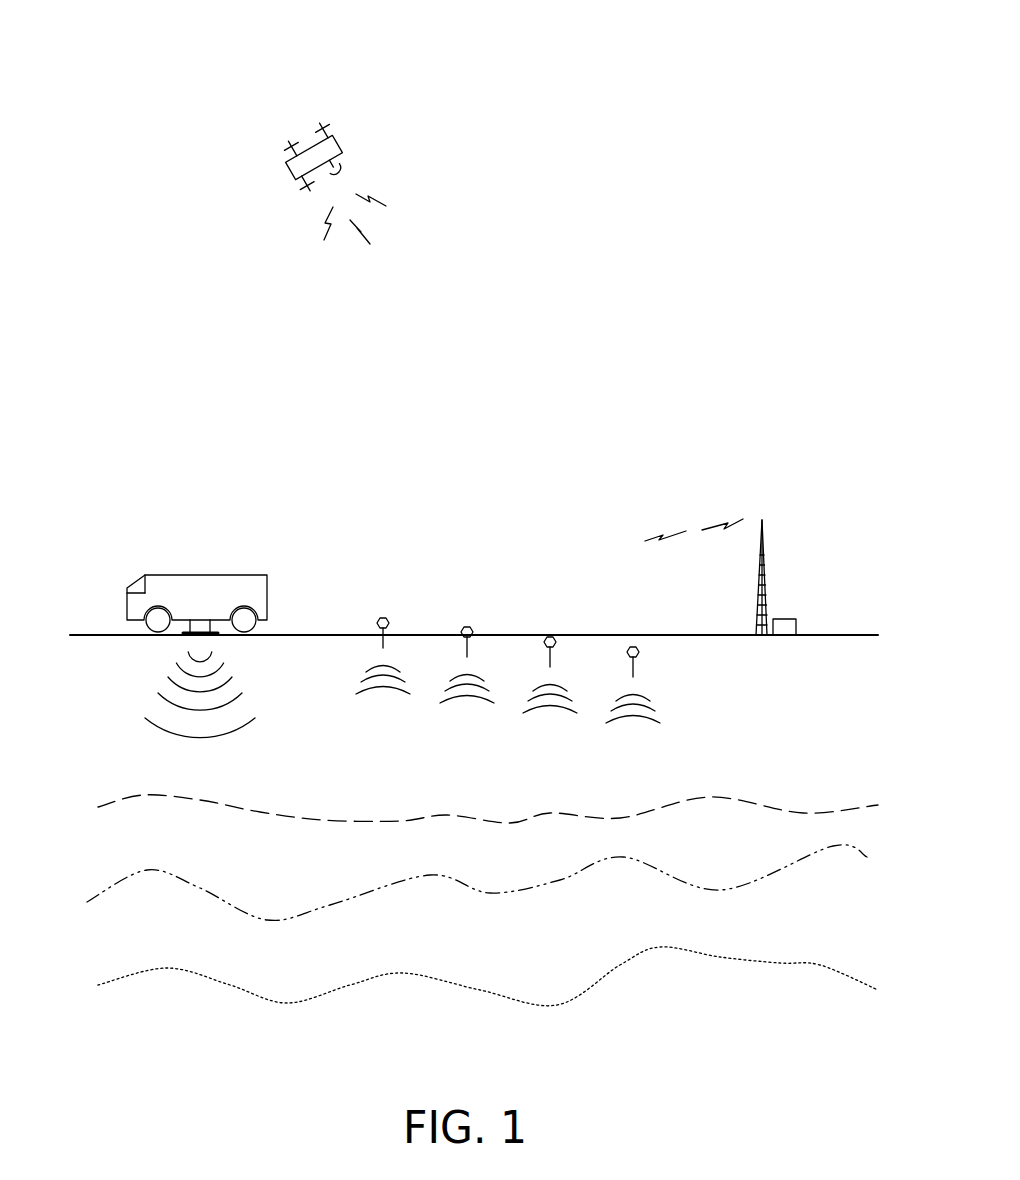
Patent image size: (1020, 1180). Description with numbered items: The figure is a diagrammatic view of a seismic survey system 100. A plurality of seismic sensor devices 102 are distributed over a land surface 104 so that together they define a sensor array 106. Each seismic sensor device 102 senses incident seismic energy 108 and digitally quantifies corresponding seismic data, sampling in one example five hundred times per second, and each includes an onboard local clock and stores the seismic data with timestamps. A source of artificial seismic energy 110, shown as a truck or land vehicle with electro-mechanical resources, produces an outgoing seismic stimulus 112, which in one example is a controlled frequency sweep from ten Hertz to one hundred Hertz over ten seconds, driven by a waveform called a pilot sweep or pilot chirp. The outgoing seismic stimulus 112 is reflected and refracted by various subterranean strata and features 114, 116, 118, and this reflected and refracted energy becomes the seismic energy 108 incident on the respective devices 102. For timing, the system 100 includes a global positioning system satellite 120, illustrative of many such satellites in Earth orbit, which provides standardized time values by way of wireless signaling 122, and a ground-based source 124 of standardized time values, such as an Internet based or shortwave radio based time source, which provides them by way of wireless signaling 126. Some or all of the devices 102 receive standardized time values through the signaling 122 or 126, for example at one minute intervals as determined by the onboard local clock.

The system 100 is at (557, 60).
The seismic sensor device 102 is at (383, 618).
The land surface 104 is at (838, 634).
The sensor array 106 is at (459, 503).
The incident seismic energy 108 is at (683, 687).
The source of artificial seismic energy 110 is at (198, 575).
The outgoing seismic stimulus 112 is at (129, 688).
The subterranean strata and features 114 is at (306, 821).
The subterranean strata and features 116 is at (547, 886).
The subterranean strata and features 118 is at (378, 987).
The global positioning system satellite 120 is at (294, 156).
The wireless signaling 122 is at (311, 228).
The ground-based source of standardized time values 124 is at (765, 566).
The wireless signaling 126 is at (681, 501).